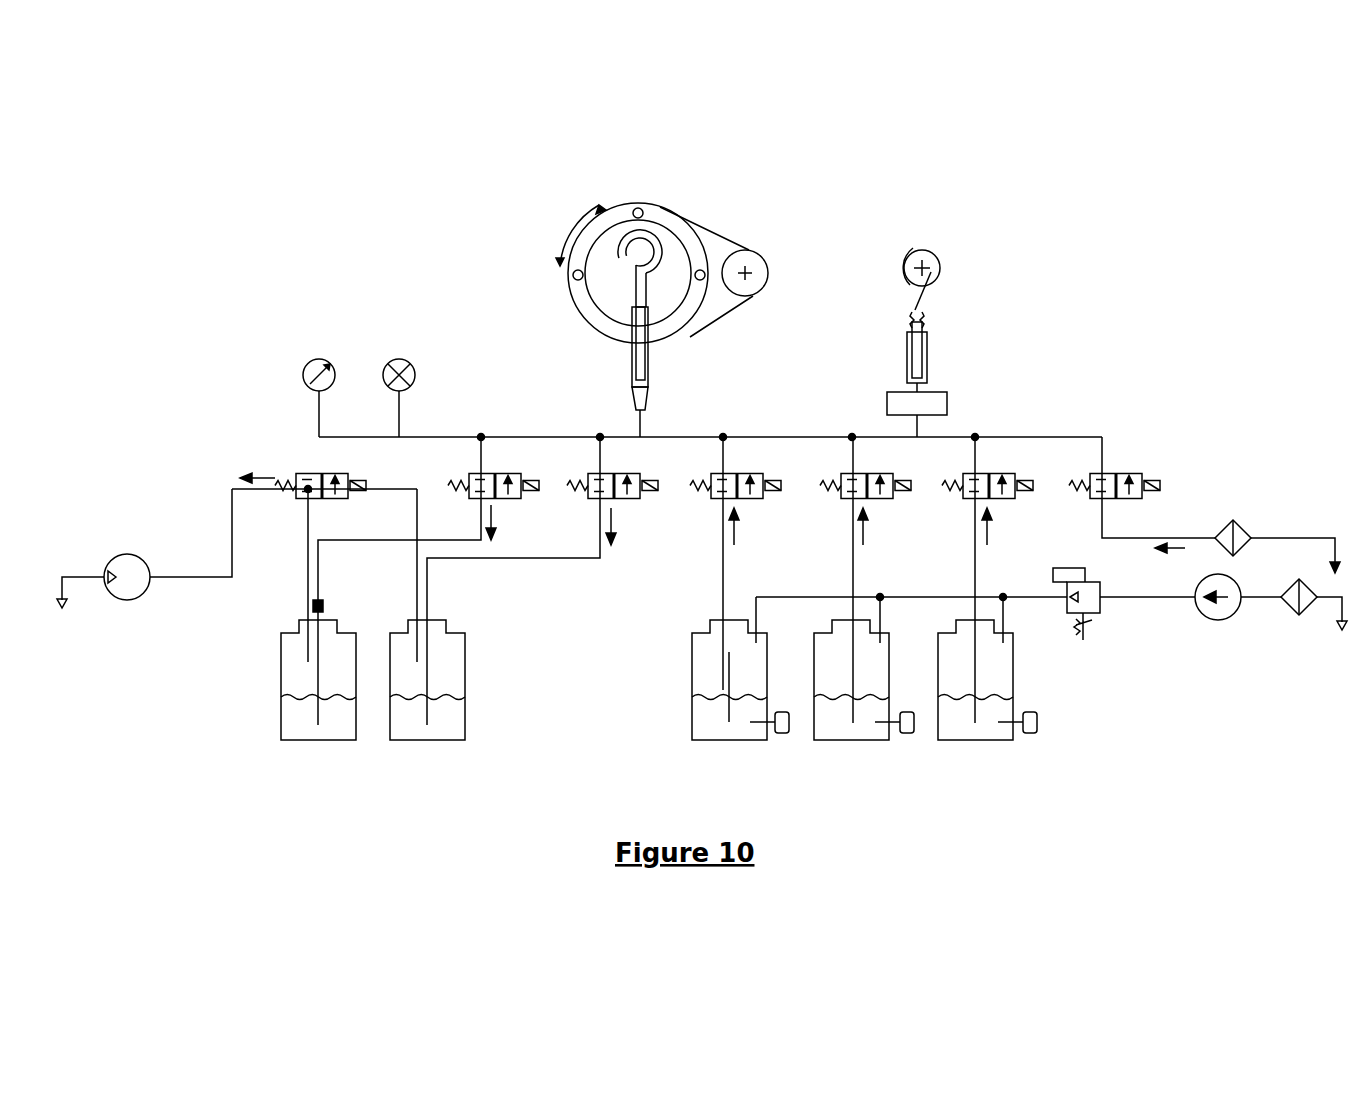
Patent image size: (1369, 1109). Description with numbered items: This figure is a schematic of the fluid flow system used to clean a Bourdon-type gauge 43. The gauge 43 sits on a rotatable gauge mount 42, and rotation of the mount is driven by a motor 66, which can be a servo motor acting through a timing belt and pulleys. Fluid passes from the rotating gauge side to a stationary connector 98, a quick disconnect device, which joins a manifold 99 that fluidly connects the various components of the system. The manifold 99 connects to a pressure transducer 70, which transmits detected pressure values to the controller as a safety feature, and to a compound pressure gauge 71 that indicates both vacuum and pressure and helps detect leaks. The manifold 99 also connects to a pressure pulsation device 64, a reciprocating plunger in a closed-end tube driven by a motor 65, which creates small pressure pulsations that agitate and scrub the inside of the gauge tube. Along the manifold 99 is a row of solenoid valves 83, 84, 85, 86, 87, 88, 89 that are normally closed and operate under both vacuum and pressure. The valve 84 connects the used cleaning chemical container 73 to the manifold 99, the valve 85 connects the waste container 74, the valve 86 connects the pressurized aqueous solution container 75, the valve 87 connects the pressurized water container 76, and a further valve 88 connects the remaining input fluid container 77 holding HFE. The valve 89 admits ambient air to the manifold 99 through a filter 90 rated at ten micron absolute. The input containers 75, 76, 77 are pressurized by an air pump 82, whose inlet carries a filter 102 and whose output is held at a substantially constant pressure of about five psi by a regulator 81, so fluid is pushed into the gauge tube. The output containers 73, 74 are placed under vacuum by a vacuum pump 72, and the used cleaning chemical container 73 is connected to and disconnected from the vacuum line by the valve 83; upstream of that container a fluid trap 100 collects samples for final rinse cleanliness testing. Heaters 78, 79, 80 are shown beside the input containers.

The gauge mount 42 is at (578, 310).
The gauge 43 is at (650, 245).
The pressure pulsation device 64 is at (930, 362).
The motor 65 is at (942, 283).
The motor 66 is at (750, 303).
The pressure transducer 70 is at (306, 362).
The pressure gauge 71 is at (386, 361).
The vacuum pump 72 is at (109, 560).
The used cleaning chemical container 73 is at (282, 660).
The waste container 74 is at (455, 628).
The pressurized aqueous solution container 75 is at (700, 612).
The pressurized water container 76 is at (840, 612).
The input fluid container 77 is at (970, 612).
The cleaner tank heater 78 is at (783, 735).
The water tank heater 79 is at (908, 735).
The HFE tank heater 80 is at (1032, 735).
The pressure regulator 81 is at (1100, 616).
The pump 82 is at (1197, 586).
The valve 83 is at (318, 502).
The valve 84 is at (468, 481).
The valve 85 is at (587, 481).
The valve 86 is at (712, 481).
The valve 87 is at (840, 481).
The valve 88 is at (963, 481).
The valve 89 is at (1090, 481).
The filter 90 is at (1238, 523).
The connector 98 is at (622, 390).
The manifold 99 is at (676, 437).
The fluid trap 100 is at (316, 606).
The filter 102 is at (1304, 620).